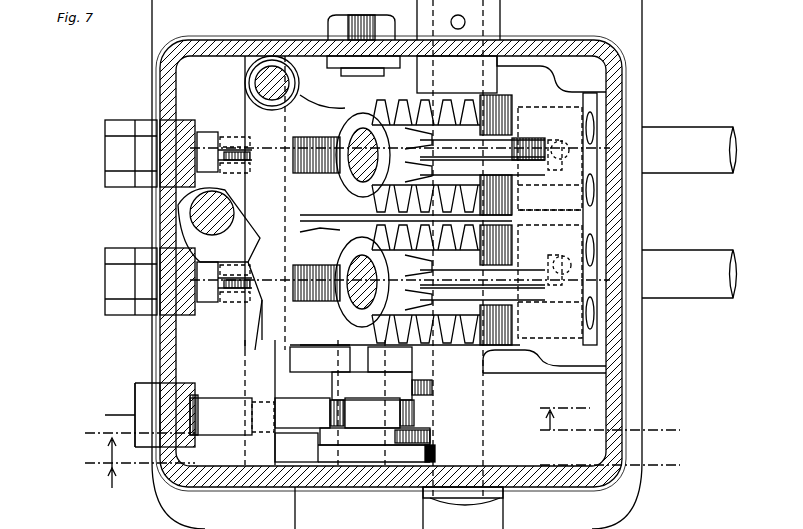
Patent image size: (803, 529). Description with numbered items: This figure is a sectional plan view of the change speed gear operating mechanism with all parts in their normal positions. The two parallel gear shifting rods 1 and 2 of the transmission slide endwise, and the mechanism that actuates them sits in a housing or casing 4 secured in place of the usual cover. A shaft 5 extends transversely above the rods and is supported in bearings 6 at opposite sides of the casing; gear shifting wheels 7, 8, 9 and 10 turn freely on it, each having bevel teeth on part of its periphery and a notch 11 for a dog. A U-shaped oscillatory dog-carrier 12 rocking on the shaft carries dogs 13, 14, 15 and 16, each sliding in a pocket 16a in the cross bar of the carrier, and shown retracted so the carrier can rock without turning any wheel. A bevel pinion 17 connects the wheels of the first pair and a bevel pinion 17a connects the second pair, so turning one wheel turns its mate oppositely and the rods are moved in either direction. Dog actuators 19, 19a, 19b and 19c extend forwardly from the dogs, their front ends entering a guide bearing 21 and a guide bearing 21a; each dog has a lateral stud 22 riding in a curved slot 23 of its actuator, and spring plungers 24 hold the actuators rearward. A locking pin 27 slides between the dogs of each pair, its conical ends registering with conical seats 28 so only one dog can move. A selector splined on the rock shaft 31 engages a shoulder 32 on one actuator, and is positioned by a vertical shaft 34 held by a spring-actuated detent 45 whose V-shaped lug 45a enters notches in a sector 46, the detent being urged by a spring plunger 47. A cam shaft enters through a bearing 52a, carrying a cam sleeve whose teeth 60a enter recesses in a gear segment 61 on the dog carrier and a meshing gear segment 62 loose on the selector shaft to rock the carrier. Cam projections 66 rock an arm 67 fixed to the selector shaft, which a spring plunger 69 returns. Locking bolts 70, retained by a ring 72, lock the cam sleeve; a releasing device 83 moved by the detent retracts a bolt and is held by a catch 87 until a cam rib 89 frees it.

The gear shifting rod 1 is at (689, 150).
The gear shifting rod 2 is at (689, 274).
The housing or casing 4 is at (614, 352).
The shaft 5 is at (500, 29).
The bearings 6 is at (500, 500).
The gear shifting wheel 7 is at (400, 146).
The gear shifting wheel 8 is at (384, 331).
The gear shifting wheel 9 is at (400, 276).
The gear shifting wheel 10 is at (405, 324).
The notch 11 is at (384, 447).
The oscillatory yoke or dog-carrier 12 is at (550, 220).
The dog 13 is at (550, 158).
The dog 14 is at (550, 197).
The dog 15 is at (550, 281).
The dog 16 is at (550, 318).
The pocket 16a is at (618, 150).
The bevel pinion 17 is at (300, 222).
The bevel pinion 17a is at (329, 235).
The dog actuator 19 is at (482, 148).
The dog actuator 19a is at (482, 166).
The dog actuator 19b is at (482, 276).
The dog actuator 19c is at (482, 293).
The guide sleeve or bearing 21 is at (205, 130).
The guide bearing 21a is at (218, 305).
The lateral stud 22 is at (522, 138).
The curved slot 23 is at (135, 277).
The spring plunger 24 is at (158, 192).
The locking pin 27 is at (560, 142).
The conical seat 28 is at (563, 227).
The rock shaft 31 is at (300, 338).
The shoulder 32 is at (260, 400).
The vertical shaft 34 is at (195, 215).
The spring-actuated detent or lever 45 is at (272, 203).
The V-shaped lug 45a is at (262, 205).
The sector 46 is at (261, 178).
The spring plunger 47 is at (378, 72).
The bearing 52a is at (450, 508).
The cam teeth or arms 60a is at (412, 386).
The gear segment 61 is at (375, 402).
The gear segment 62 is at (320, 359).
The cam projection 66 is at (379, 413).
The arm 67 is at (309, 413).
The spring plunger 69 is at (232, 416).
The locking bolt or block 70 is at (436, 455).
The ring 72 is at (340, 465).
The releasing arm or device 83 is at (296, 447).
The catch 87 is at (375, 436).
The cam rib or projection 89 is at (357, 450).